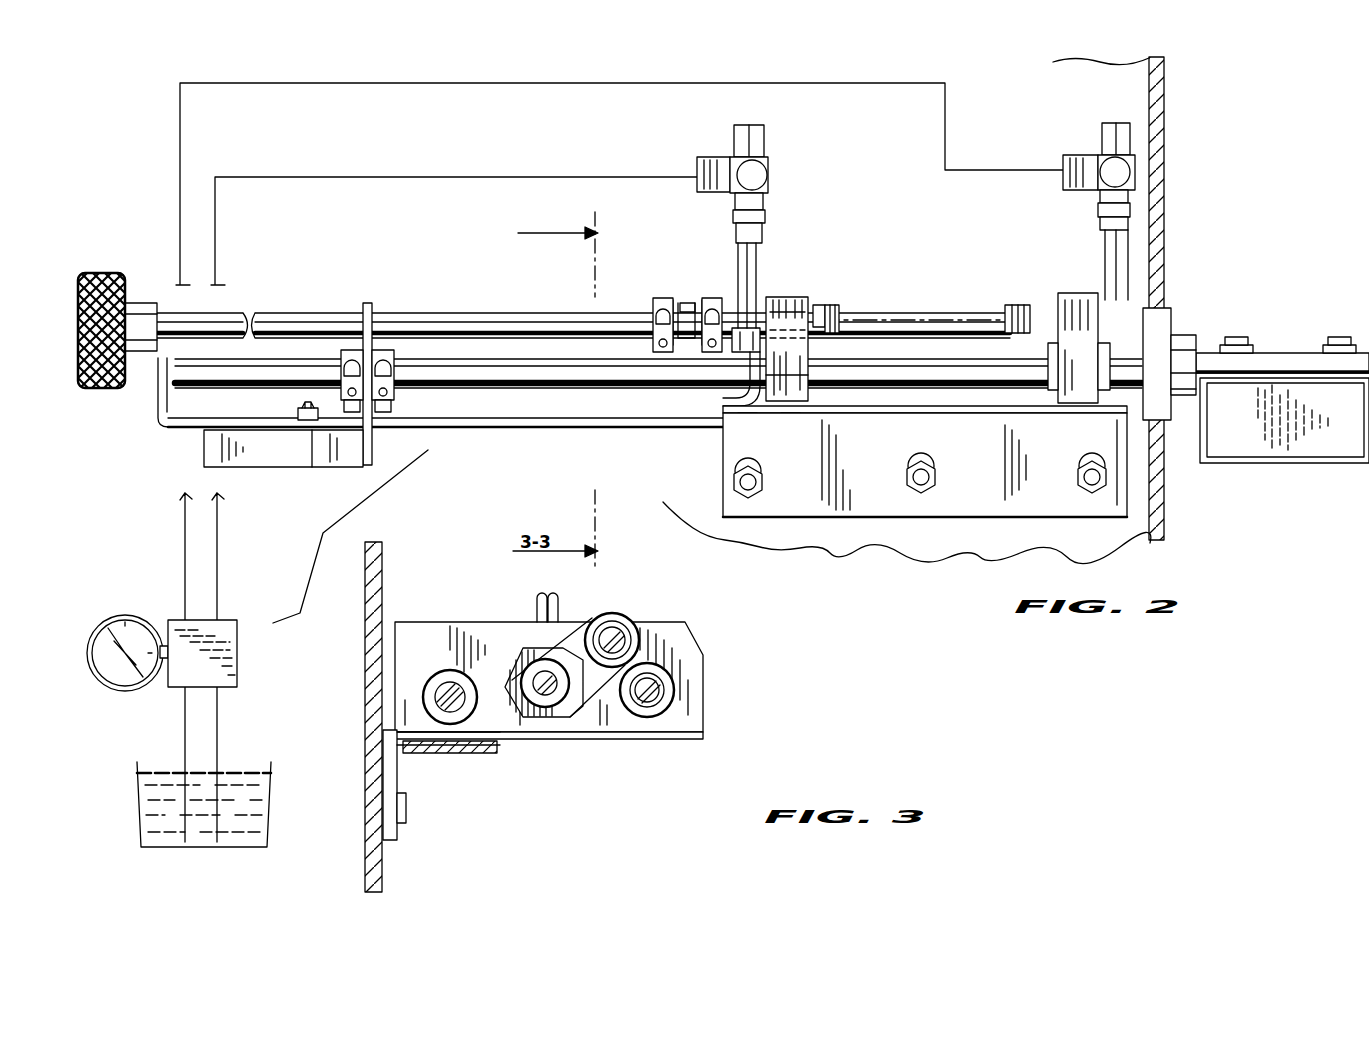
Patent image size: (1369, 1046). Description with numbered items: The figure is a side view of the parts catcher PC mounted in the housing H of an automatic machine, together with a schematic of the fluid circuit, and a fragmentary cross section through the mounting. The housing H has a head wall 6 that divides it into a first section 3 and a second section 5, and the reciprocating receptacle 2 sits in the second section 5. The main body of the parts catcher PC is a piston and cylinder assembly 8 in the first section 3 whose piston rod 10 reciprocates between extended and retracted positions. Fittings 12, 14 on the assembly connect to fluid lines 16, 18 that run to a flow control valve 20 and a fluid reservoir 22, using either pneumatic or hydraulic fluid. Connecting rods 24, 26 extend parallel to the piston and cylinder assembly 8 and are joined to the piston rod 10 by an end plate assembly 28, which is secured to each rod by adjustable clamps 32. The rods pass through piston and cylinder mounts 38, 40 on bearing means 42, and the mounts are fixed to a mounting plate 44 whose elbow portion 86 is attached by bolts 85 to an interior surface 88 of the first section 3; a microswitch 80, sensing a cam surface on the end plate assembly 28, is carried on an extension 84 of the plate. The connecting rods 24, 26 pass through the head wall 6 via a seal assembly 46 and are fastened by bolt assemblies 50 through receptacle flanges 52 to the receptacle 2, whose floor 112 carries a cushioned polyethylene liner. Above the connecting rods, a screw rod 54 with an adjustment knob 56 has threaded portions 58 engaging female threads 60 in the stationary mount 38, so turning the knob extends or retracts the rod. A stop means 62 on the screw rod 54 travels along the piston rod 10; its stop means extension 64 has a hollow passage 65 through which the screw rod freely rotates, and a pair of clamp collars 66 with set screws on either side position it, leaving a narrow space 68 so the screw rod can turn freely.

In FIG. 2, the receptacle 2 is at (1318, 472).
In FIG. 2, the first section 3 is at (910, 249).
In FIG. 2, the second section 5 is at (1261, 184).
In FIG. 2, the head wall 6 is at (1160, 168).
In FIG. 2, the piston and cylinder assembly 8 is at (915, 347).
In FIG. 2, the piston rod 10 is at (479, 353).
In FIG. 2, the fitting 12 is at (752, 170).
In FIG. 3, the fitting 12 is at (537, 605).
In FIG. 2, the fitting 14 is at (1110, 170).
In FIG. 2, the fluid line 16 is at (560, 177).
In FIG. 2, the fluid line 18 is at (758, 83).
In FIG. 2, the flow control valve 20 is at (240, 660).
In FIG. 2, the fluid reservoir 22 is at (270, 793).
In FIG. 3, the connecting rod 24 is at (655, 688).
In FIG. 2, the connecting rod 26 is at (463, 375).
In FIG. 3, the connecting rod 26 is at (443, 680).
In FIG. 2, the end plate assembly 28 is at (365, 303).
In FIG. 2, the clamps 32 is at (345, 412).
In FIG. 2, the piston and cylinder mount 38 is at (787, 387).
In FIG. 3, the piston and cylinder mount 38 is at (690, 707).
In FIG. 2, the piston and cylinder mount 40 is at (1079, 348).
In FIG. 2, the bearing means 42 is at (862, 320).
In FIG. 2, the mounting plate 44 is at (968, 413).
In FIG. 3, the mounting plate 44 is at (638, 733).
In FIG. 2, the seal assembly 46 is at (1185, 338).
In FIG. 2, the bolt assemblies 50 is at (1237, 337).
In FIG. 2, the receptacle flange 52 is at (1283, 385).
In FIG. 2, the screw rod 54 is at (452, 318).
In FIG. 2, the adjustment knob 56 is at (93, 275).
In FIG. 2, the threaded portion 58 is at (822, 307).
In FIG. 2, the female threads 60 is at (793, 300).
In FIG. 2, the stop means 62 is at (679, 288).
In FIG. 3, the stop means 62 is at (568, 717).
In FIG. 2, the stop means extension 64 is at (684, 330).
In FIG. 3, the stop means extension 64 is at (600, 618).
In FIG. 2, the hollow passage 65 is at (700, 320).
In FIG. 2, the clamp collars 66 is at (653, 345).
In FIG. 2, the narrow space 68 is at (675, 300).
In FIG. 2, the microswitch 80 is at (280, 450).
In FIG. 2, the extension 84 is at (522, 428).
In FIG. 2, the bolts 85 is at (760, 483).
In FIG. 3, the bolts 85 is at (405, 808).
In FIG. 2, the elbow portion 86 is at (887, 463).
In FIG. 3, the elbow portion 86 is at (400, 773).
In FIG. 3, the interior surface 88 is at (383, 583).
In FIG. 2, the floor 112 is at (1265, 460).
In FIG. 2, the parts catcher PC is at (574, 63).
In FIG. 2, the housing H is at (1200, 111).